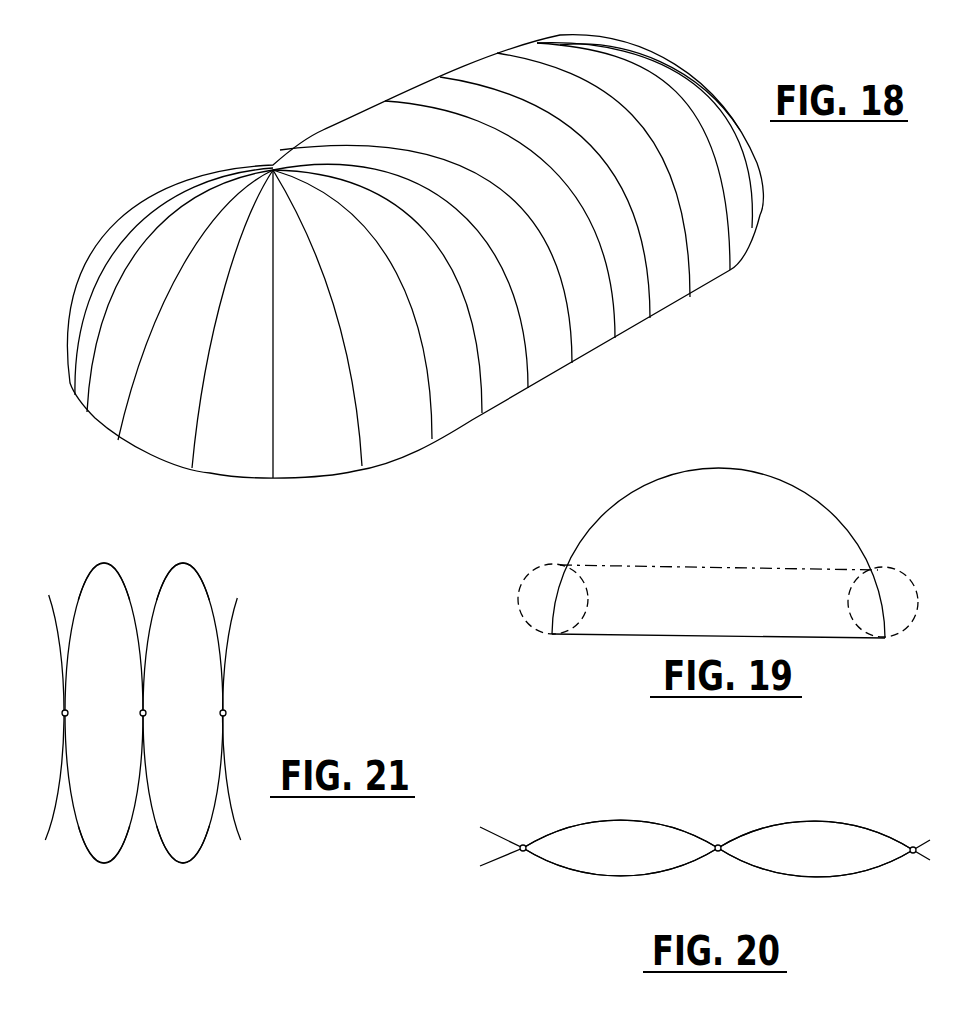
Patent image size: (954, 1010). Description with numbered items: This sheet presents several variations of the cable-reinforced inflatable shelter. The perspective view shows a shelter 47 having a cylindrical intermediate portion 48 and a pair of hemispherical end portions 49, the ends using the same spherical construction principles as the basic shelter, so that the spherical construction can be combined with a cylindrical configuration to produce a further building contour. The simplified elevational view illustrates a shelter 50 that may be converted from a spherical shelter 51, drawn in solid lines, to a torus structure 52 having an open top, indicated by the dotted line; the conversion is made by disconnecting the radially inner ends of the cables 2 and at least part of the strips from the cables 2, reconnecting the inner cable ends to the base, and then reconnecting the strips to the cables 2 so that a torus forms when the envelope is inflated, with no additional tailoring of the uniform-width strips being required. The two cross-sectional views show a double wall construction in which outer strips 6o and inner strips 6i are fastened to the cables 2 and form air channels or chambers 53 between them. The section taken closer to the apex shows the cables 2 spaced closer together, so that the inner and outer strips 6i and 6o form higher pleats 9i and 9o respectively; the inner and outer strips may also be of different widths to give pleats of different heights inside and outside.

In FIG. 18, the shelter 47 is at (323, 127).
In FIG. 18, the cylindrical intermediate portion 48 is at (643, 263).
In FIG. 18, the hemispherical end portions 49 is at (158, 367).
In FIG. 19, the shelter 50 is at (699, 531).
In FIG. 19, the spherical shelter 51 is at (641, 490).
In FIG. 19, the torus structure 52 is at (530, 577).
In FIG. 21, the air channels or chambers 53 is at (123, 700).
In FIG. 20, the air channels or chambers 53 is at (642, 857).
In FIG. 21, the outer strips 6o is at (85, 583).
In FIG. 20, the outer strips 6o is at (597, 820).
In FIG. 21, the inner strips 6i is at (75, 827).
In FIG. 20, the inner strips 6i is at (608, 875).
In FIG. 21, the outer pleats 9o is at (183, 563).
In FIG. 21, the inner pleats 9i is at (183, 863).
In FIG. 21, the cables 2 is at (62, 713).
In FIG. 20, the cables 2 is at (523, 847).